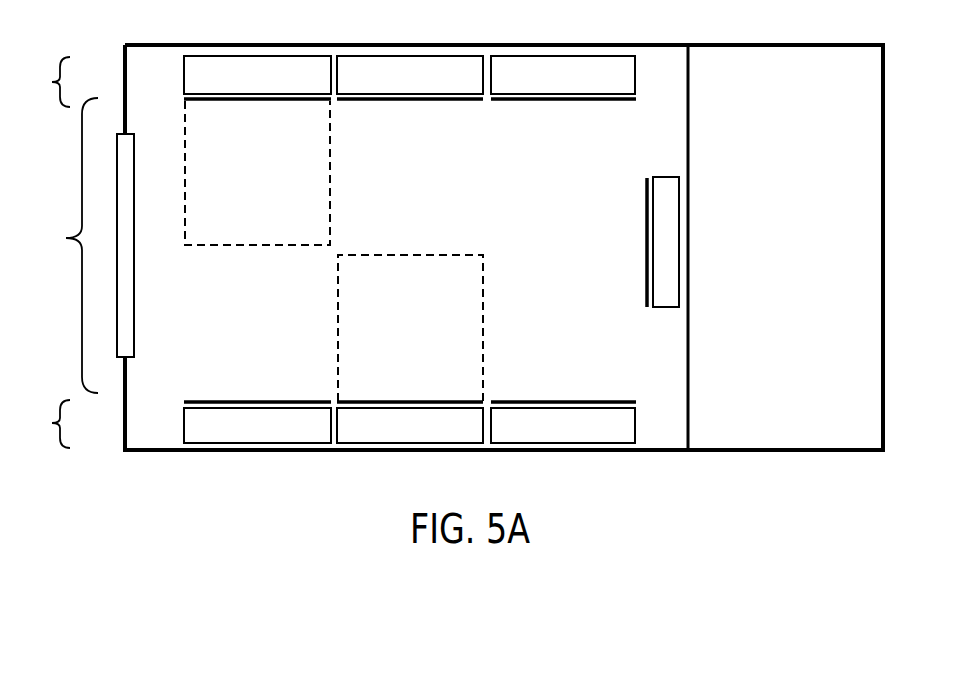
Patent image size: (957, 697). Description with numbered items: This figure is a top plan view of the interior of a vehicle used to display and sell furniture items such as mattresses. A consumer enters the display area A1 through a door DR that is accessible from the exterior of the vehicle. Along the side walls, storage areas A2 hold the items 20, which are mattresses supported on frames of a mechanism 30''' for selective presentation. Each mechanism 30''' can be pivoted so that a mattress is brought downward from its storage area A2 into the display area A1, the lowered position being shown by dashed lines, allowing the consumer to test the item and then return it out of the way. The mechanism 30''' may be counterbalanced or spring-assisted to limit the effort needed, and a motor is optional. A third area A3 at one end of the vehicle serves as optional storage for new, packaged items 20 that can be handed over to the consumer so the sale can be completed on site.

The items 20 is at (258, 63).
The mechanism for selective presentation of furniture items 30''' is at (422, 250).
The door DR is at (121, 347).
The display area A1 is at (70, 245).
The storage area A2 is at (49, 252).
The third area A3 is at (797, 418).